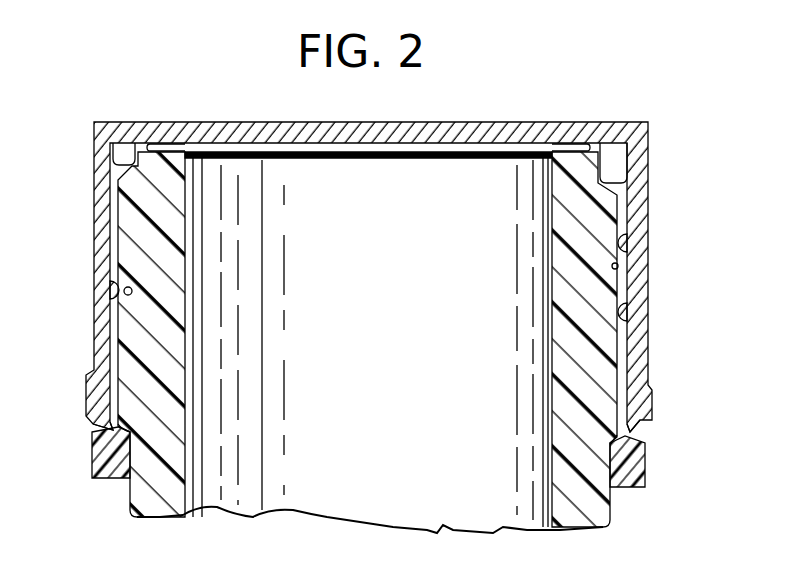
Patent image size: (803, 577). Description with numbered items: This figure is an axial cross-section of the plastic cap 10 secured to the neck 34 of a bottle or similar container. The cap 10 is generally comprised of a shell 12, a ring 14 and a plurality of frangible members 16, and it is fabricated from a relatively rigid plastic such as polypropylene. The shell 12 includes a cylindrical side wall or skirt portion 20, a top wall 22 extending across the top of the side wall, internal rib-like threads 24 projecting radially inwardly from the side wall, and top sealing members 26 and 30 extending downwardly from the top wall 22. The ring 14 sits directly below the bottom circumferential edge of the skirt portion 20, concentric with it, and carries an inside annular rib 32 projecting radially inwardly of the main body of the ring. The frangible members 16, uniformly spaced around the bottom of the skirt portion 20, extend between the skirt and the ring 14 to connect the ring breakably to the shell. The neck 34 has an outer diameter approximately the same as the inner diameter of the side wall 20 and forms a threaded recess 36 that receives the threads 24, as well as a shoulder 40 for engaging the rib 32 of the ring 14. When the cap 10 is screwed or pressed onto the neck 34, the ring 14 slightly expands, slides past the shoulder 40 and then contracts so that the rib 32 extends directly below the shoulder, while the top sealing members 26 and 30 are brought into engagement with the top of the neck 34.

The plastic cap 10 is at (650, 141).
The shell 12 is at (92, 147).
The ring 14 is at (94, 478).
The frangible members 16 is at (110, 423).
The cylindrical side wall or skirt portion 20 is at (100, 350).
The top wall 22 is at (431, 125).
The internal rib-like threads 24 is at (113, 291).
The top sealing member 26 is at (117, 143).
The top sealing member 30 is at (193, 142).
The inside annular rib 32 is at (125, 445).
The neck 34 is at (167, 226).
The threaded recess 36 is at (132, 291).
The shoulder 40 is at (117, 425).